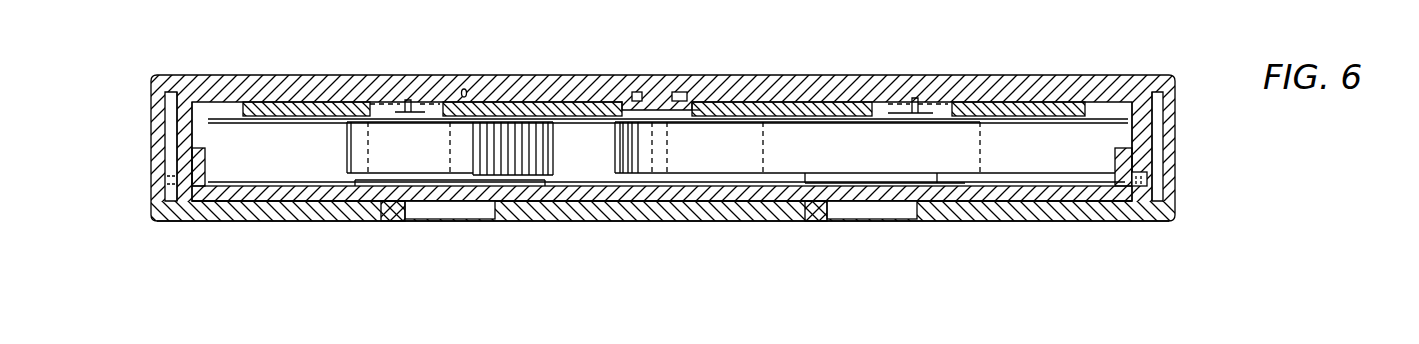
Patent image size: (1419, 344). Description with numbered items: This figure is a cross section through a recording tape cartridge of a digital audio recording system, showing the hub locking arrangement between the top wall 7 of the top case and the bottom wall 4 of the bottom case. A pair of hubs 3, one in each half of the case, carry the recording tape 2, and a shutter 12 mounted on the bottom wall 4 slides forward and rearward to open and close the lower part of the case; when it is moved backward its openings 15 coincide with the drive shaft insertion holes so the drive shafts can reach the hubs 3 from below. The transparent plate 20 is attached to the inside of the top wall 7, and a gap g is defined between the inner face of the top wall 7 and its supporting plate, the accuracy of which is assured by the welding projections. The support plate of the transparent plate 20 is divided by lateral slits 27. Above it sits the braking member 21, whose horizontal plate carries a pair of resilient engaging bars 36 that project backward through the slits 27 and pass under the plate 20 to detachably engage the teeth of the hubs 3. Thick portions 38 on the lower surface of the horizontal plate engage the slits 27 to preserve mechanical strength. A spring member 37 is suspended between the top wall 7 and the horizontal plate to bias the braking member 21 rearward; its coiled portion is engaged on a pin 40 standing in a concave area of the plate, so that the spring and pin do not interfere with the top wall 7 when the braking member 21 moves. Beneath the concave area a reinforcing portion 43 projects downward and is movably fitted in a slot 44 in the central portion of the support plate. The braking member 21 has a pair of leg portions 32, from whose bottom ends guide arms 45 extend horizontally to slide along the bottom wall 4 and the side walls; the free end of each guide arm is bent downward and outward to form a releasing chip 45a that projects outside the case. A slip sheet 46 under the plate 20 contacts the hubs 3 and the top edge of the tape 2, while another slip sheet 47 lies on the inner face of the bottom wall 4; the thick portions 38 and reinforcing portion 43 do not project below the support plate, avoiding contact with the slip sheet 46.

The recording tape 2 is at (615, 153).
The hub 3 is at (347, 152).
The bottom wall 4 is at (283, 195).
The top wall 7 is at (283, 82).
The shutter 12 is at (676, 208).
The opening 15 is at (390, 224).
The transparent plate 20 is at (546, 100).
The braking member 21 is at (757, 101).
The slit 27 is at (440, 107).
The leg portion 32 is at (185, 122).
The engaging bar 36 is at (408, 101).
The spring member 37 is at (637, 91).
The thick portion 38 is at (376, 105).
The pin 40 is at (663, 92).
The reinforcing portion 43 is at (659, 148).
The slot 44 is at (688, 112).
The guide arm 45 is at (190, 183).
The releasing chip 45a is at (152, 192).
The slip sheet 46 is at (217, 124).
The slip sheet 47 is at (267, 182).
The gap g is at (466, 89).